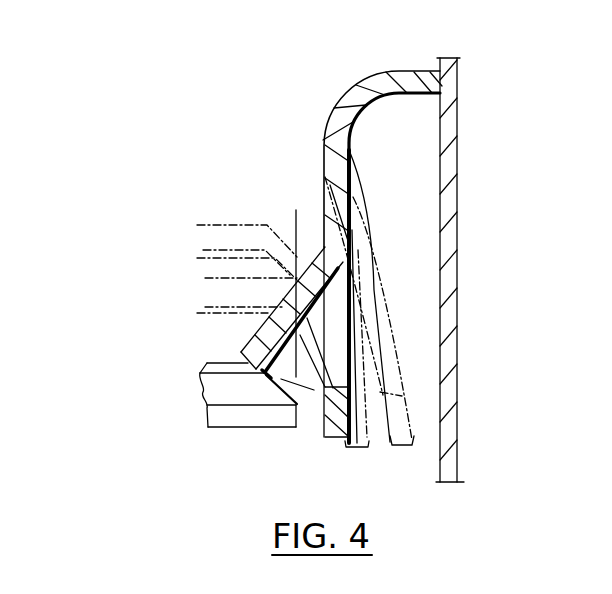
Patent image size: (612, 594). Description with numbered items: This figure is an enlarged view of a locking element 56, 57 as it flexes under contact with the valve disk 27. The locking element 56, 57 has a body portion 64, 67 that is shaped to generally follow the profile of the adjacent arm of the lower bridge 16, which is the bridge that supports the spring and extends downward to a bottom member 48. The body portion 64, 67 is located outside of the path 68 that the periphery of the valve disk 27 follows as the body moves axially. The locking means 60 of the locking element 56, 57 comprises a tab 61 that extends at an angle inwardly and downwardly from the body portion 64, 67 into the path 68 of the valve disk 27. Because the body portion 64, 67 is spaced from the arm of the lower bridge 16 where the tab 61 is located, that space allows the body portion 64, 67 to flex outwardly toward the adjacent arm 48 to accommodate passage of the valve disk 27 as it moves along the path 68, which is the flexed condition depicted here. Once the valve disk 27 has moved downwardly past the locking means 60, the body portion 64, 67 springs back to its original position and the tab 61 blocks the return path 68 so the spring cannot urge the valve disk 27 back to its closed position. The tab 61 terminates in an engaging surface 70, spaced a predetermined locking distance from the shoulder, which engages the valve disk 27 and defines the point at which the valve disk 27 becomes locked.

The lower bridge 16 is at (452, 222).
The bottom member 48 is at (453, 282).
The locking element 56 is at (335, 240).
The locking element 57 is at (300, 111).
The locking means 60 is at (203, 346).
The tab 61 is at (243, 333).
The body portion 64 is at (322, 316).
The body portion 67 is at (327, 437).
The path 68 is at (296, 210).
The engaging surface 70 is at (207, 363).
The valve disk 27 is at (220, 418).